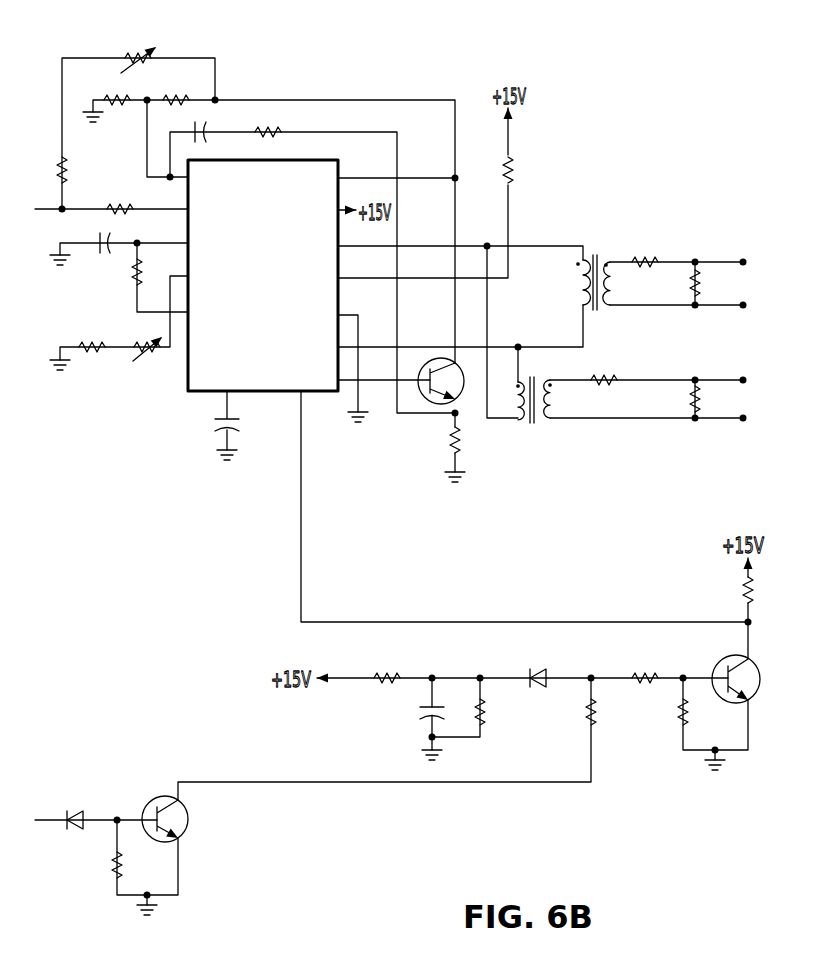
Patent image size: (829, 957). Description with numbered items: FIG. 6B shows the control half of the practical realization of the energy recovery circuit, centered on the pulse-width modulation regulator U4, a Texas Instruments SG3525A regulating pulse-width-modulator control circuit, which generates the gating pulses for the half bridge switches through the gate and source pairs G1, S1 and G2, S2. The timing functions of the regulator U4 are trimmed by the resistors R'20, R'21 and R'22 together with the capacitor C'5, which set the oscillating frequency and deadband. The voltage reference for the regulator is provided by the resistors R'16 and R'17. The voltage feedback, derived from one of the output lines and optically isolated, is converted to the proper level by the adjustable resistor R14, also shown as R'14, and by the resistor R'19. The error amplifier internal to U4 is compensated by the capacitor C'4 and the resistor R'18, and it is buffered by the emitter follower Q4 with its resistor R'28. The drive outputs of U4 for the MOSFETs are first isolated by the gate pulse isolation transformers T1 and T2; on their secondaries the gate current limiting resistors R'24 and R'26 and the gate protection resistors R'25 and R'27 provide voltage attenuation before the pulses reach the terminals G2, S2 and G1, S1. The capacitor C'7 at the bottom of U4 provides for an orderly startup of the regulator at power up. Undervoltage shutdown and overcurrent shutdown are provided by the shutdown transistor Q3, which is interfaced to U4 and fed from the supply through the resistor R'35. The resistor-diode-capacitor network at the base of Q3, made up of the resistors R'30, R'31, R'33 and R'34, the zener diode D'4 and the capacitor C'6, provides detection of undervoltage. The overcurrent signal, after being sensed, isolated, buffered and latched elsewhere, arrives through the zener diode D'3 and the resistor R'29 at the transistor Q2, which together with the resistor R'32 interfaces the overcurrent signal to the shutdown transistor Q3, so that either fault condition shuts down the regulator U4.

The adjustable feedback resistor R'14 is at (157, 42).
The voltage reference resistor R'16 is at (97, 87).
The voltage reference resistor R'17 is at (181, 86).
The compensation capacitor C'4 is at (223, 124).
The compensation resistor R'18 is at (288, 121).
The adjustable feedback resistor R14 is at (67, 162).
The feedback level resistor R'19 is at (109, 188).
The timing capacitor C'5 is at (129, 232).
The timing resistor R'20 is at (107, 273).
The timing resistor R'21 is at (84, 326).
The adjustable timing resistor R'22 is at (125, 361).
The pulse-width modulation regulator U4 is at (278, 283).
The soft start capacitor C'7 is at (198, 425).
The emitter follower transistor Q4 is at (432, 360).
The emitter follower resistor R'28 is at (423, 441).
The gate pulse isolation transformer T1 is at (533, 420).
The gate pulse isolation transformer T2 is at (598, 258).
The gate current limiting resistor R'24 is at (660, 243).
The gate protection resistor R'25 is at (659, 284).
The gate output terminal G2 is at (755, 264).
The source output terminal S2 is at (755, 307).
The gate current limiting resistor R'26 is at (623, 364).
The gate protection resistor R'27 is at (655, 399).
The gate output terminal G1 is at (754, 387).
The source output terminal S1 is at (754, 428).
The shutdown circuit resistor R'35 is at (708, 590).
The shutdown transistor Q3 is at (762, 652).
The shutdown circuit resistor R'33 is at (621, 662).
The shutdown circuit resistor R'34 is at (650, 706).
The interface resistor R'32 is at (561, 721).
The shutdown circuit resistor R'30 is at (367, 660).
The zener diode D'4 is at (515, 662).
The shutdown circuit capacitor C'6 is at (404, 714).
The shutdown circuit resistor R'31 is at (506, 709).
The zener diode D'3 is at (97, 803).
The interface transistor Q2 is at (190, 824).
The interface resistor R'29 is at (85, 855).